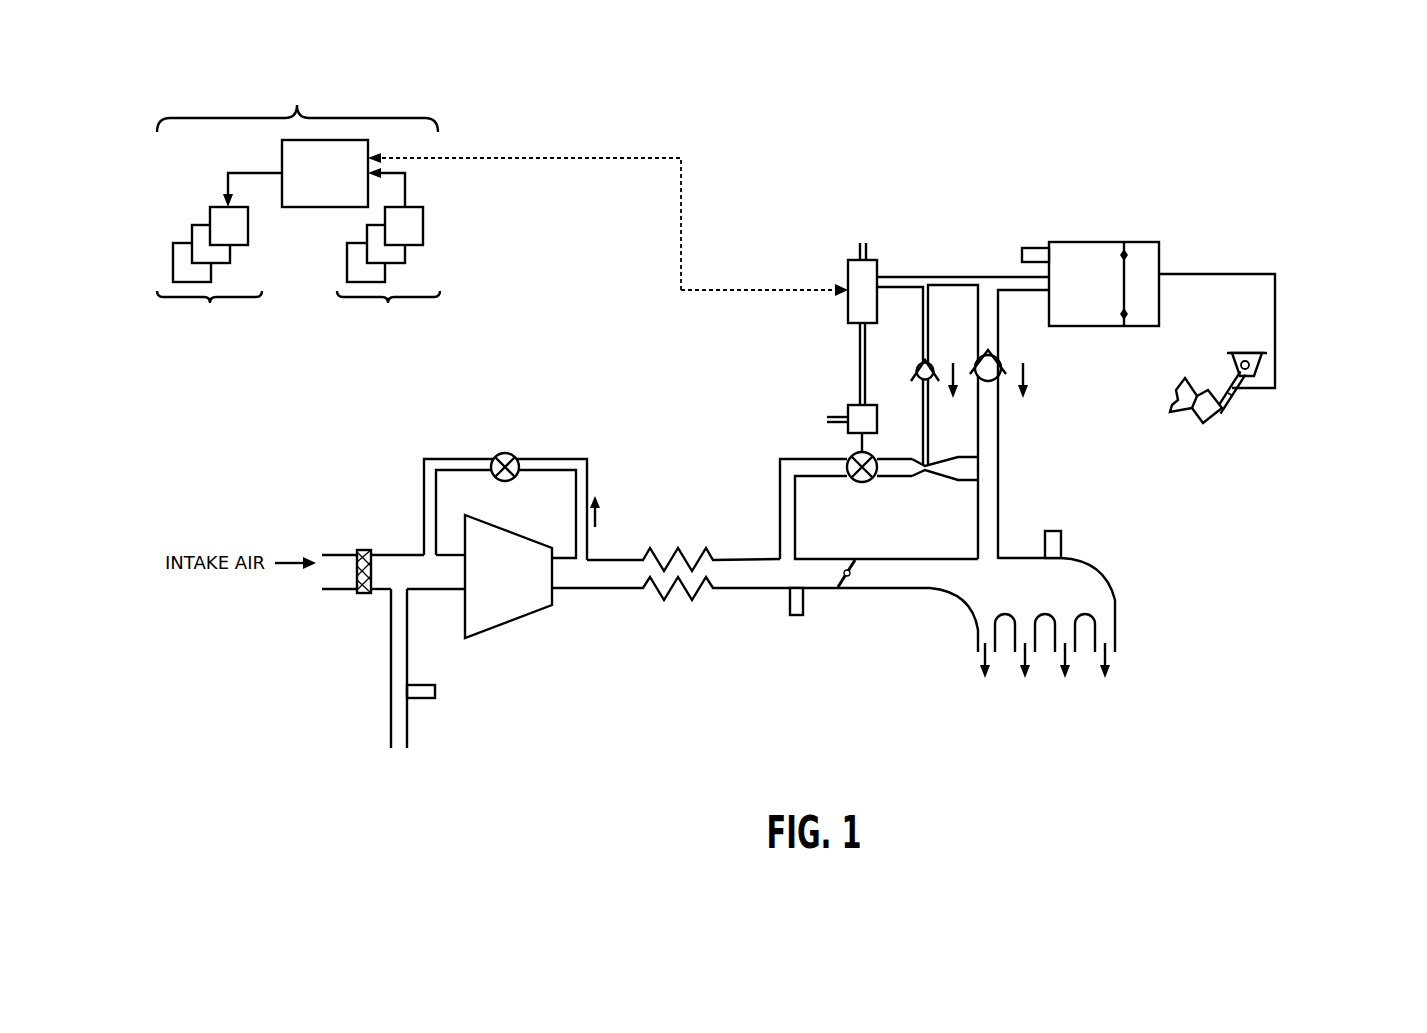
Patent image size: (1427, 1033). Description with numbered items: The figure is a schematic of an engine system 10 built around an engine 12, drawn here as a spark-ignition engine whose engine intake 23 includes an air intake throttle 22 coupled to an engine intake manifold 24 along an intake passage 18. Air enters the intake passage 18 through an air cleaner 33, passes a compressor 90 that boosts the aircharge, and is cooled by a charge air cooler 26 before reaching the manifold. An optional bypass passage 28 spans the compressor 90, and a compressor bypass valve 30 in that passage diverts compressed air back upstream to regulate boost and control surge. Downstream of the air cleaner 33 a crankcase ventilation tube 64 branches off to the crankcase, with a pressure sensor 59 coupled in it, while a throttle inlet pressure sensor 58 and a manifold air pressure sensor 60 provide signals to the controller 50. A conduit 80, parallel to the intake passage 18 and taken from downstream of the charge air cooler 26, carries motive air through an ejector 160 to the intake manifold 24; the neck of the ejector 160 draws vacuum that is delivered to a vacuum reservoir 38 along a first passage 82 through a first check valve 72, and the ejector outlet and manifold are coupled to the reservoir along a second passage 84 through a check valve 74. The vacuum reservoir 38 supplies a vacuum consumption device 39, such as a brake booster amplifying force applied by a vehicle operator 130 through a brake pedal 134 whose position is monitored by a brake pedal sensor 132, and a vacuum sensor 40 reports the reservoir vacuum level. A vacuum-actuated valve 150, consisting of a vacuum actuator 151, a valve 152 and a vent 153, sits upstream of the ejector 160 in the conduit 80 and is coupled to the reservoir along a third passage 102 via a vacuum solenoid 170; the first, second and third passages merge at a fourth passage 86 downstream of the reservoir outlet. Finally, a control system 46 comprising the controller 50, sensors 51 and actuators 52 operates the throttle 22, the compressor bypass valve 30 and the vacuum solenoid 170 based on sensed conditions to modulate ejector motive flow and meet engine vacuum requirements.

The engine system 10 is at (1350, 117).
The engine 12 is at (1150, 520).
The intake passage 18 is at (745, 556).
The air intake throttle 22 is at (842, 590).
The engine intake 23 is at (552, 690).
The engine intake manifold 24 is at (1096, 583).
The charge air cooler 26 is at (673, 558).
The bypass passage 28 is at (440, 458).
The compressor bypass valve 30 is at (505, 452).
The air cleaner 33 is at (362, 597).
The vacuum reservoir 38 is at (1079, 294).
The vacuum consumption device 39 is at (1132, 294).
The vacuum sensor 40 is at (1030, 247).
The control system 46 is at (297, 90).
The controller 50 is at (314, 186).
The sensors 51 is at (388, 268).
The actuators 52 is at (219, 270).
The throttle inlet pressure sensor 58 is at (797, 617).
The pressure sensor 59 is at (424, 699).
The manifold air pressure sensor 60 is at (1053, 530).
The crankcase ventilation tube 64 is at (391, 668).
The first check valve 72 is at (927, 362).
The check valve 74 is at (996, 362).
The conduit 80 is at (783, 458).
The first passage 82 is at (929, 330).
The second passage 84 is at (999, 440).
The fourth passage 86 is at (950, 276).
The compressor 90 is at (497, 586).
The third passage 102 is at (866, 375).
The vehicle operator 130 is at (1178, 412).
The brake pedal sensor 132 is at (1238, 362).
The brake pedal 134 is at (1220, 412).
The vacuum-actuated valve 150 is at (828, 396).
The vacuum actuator 151 is at (877, 425).
The valve 152 is at (862, 482).
The vent 153 is at (841, 422).
The ejector 160 is at (921, 481).
The vacuum solenoid 170 is at (871, 259).